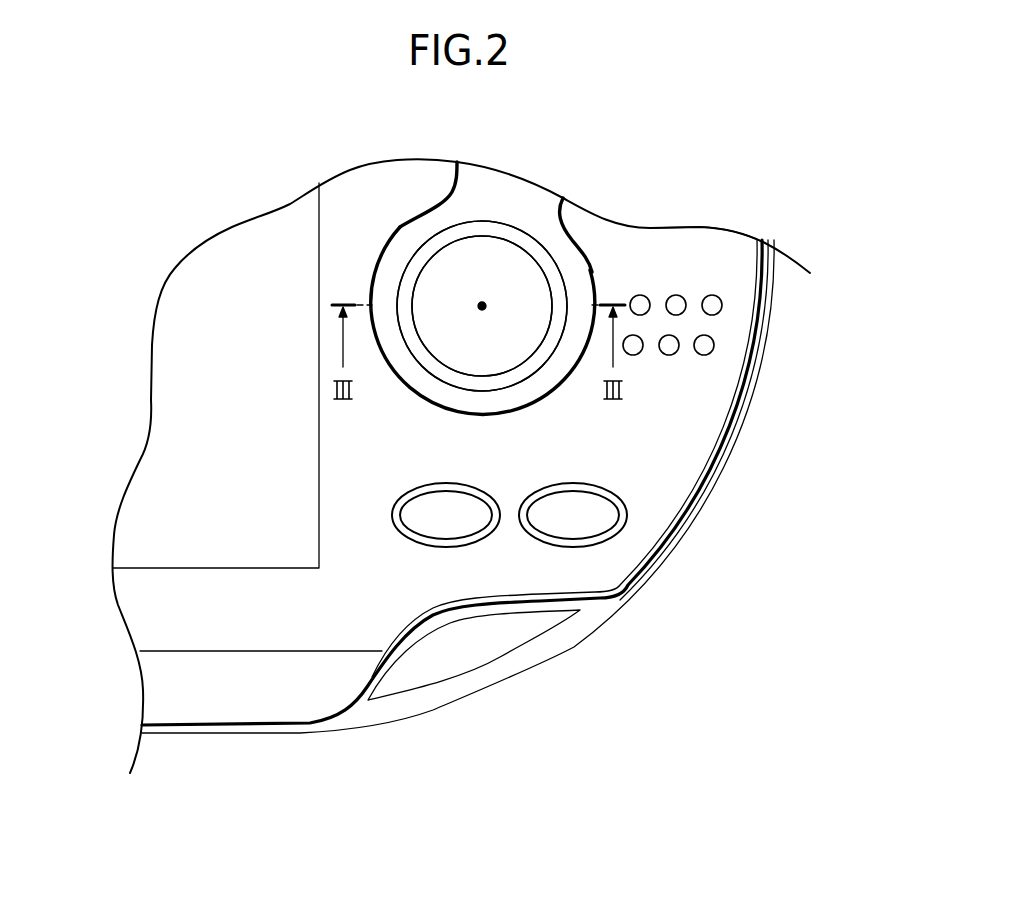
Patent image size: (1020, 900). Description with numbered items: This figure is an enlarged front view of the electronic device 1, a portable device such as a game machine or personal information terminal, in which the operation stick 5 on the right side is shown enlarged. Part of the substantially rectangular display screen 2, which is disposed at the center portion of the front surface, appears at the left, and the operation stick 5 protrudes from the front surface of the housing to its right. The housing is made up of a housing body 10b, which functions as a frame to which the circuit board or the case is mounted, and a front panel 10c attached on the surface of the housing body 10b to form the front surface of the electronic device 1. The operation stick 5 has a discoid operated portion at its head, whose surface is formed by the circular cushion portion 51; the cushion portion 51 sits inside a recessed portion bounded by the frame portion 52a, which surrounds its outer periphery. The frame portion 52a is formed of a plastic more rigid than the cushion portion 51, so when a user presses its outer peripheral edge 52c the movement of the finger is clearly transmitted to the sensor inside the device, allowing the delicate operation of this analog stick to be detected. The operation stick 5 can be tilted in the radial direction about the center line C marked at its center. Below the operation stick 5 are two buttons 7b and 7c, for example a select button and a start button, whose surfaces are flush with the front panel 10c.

The electronic device 1 is at (752, 463).
The display screen 2 is at (230, 568).
The operation stick 5 is at (526, 228).
The cushion portion 51 is at (478, 253).
The frame portion 52a is at (440, 240).
The outer peripheral edge 52c is at (400, 282).
The button 7b is at (447, 505).
The button 7c is at (573, 505).
The housing body 10b is at (572, 257).
The front panel 10c is at (670, 243).
The center line C is at (482, 311).